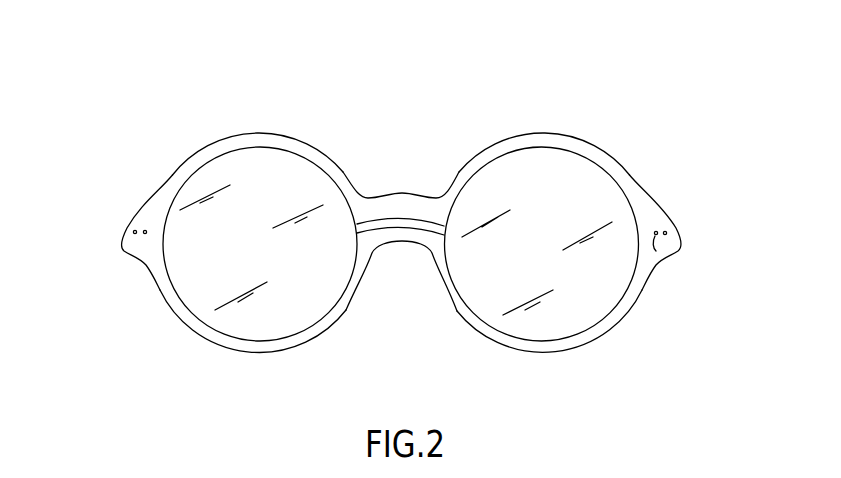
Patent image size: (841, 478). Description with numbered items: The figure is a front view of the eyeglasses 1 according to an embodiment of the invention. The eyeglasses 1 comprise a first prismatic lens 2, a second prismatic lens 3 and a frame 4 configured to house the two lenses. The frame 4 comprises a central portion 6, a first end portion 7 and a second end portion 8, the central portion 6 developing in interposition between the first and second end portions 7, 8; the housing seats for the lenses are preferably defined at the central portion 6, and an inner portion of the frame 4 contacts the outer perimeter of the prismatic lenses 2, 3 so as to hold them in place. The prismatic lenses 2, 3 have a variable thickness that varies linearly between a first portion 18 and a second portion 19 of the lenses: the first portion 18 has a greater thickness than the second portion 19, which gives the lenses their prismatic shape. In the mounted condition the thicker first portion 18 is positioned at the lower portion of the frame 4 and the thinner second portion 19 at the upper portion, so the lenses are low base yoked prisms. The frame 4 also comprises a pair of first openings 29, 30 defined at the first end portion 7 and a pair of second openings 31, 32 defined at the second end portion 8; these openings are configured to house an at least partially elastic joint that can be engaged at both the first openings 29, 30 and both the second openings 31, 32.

The eyeglasses 1 is at (403, 219).
The first prismatic lens 2 is at (258, 317).
The second prismatic lens 3 is at (578, 303).
The frame 4 is at (344, 157).
The central portion 6 is at (440, 136).
The first end portion 7 is at (122, 244).
The second end portion 8 is at (683, 229).
The first portion 18 is at (469, 292).
The second portion 19 is at (248, 178).
The first opening 29 is at (135, 230).
The first opening 30 is at (146, 230).
The second opening 31 is at (666, 231).
The second opening 32 is at (662, 257).